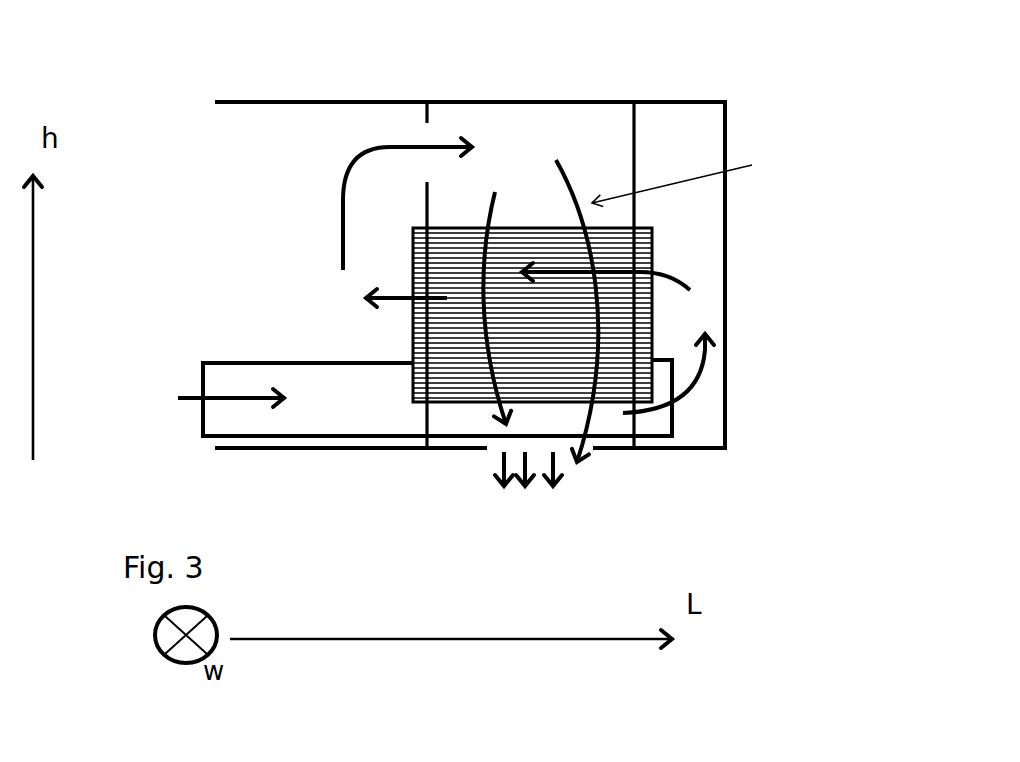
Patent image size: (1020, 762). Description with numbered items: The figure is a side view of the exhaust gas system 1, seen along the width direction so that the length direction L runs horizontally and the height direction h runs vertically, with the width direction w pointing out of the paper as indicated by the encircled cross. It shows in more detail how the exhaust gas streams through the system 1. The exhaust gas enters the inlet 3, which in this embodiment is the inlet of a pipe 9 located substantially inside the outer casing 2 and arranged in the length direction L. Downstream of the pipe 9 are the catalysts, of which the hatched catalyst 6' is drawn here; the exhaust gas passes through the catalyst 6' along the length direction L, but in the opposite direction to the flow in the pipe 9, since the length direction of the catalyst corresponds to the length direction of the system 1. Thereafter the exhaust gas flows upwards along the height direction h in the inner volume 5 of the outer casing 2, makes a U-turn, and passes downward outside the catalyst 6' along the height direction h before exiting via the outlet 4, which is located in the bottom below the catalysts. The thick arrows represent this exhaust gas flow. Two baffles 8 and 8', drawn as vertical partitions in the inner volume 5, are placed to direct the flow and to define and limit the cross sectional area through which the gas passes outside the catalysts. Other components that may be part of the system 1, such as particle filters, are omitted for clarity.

The system 1 is at (768, 60).
The outer casing 2 is at (358, 98).
The exhaust gas inlet 3 is at (200, 420).
The exhaust gas outlet 4 is at (494, 458).
The inner volume 5 is at (264, 191).
The catalyst 6' is at (609, 283).
The baffle 8 is at (593, 224).
The baffle 8' is at (662, 240).
The pipe 9 is at (373, 414).